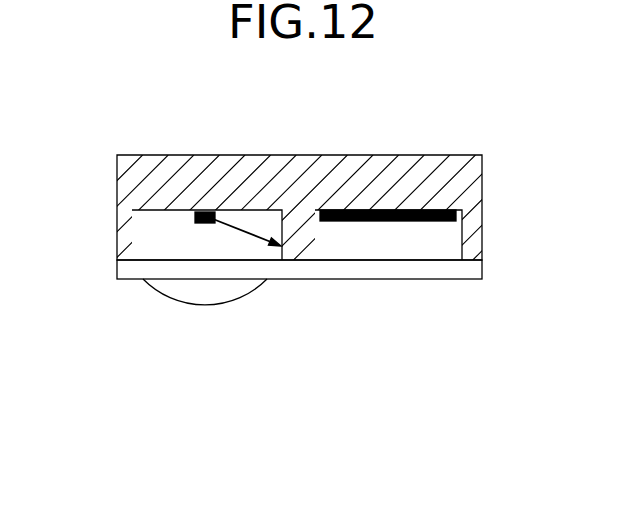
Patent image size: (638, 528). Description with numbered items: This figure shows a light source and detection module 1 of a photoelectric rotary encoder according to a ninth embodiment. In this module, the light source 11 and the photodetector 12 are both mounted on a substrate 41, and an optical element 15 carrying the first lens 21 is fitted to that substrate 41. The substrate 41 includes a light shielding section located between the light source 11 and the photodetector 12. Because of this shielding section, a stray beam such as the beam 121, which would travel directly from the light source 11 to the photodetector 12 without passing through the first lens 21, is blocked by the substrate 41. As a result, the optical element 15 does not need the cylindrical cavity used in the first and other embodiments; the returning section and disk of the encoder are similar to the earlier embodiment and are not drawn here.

The light source and detection module 1 is at (295, 236).
The light source 11 is at (205, 210).
The beam 121 is at (232, 225).
The substrate 41 is at (396, 172).
The photodetector 12 is at (440, 222).
The optical element 15 is at (118, 265).
The first lens 21 is at (205, 298).